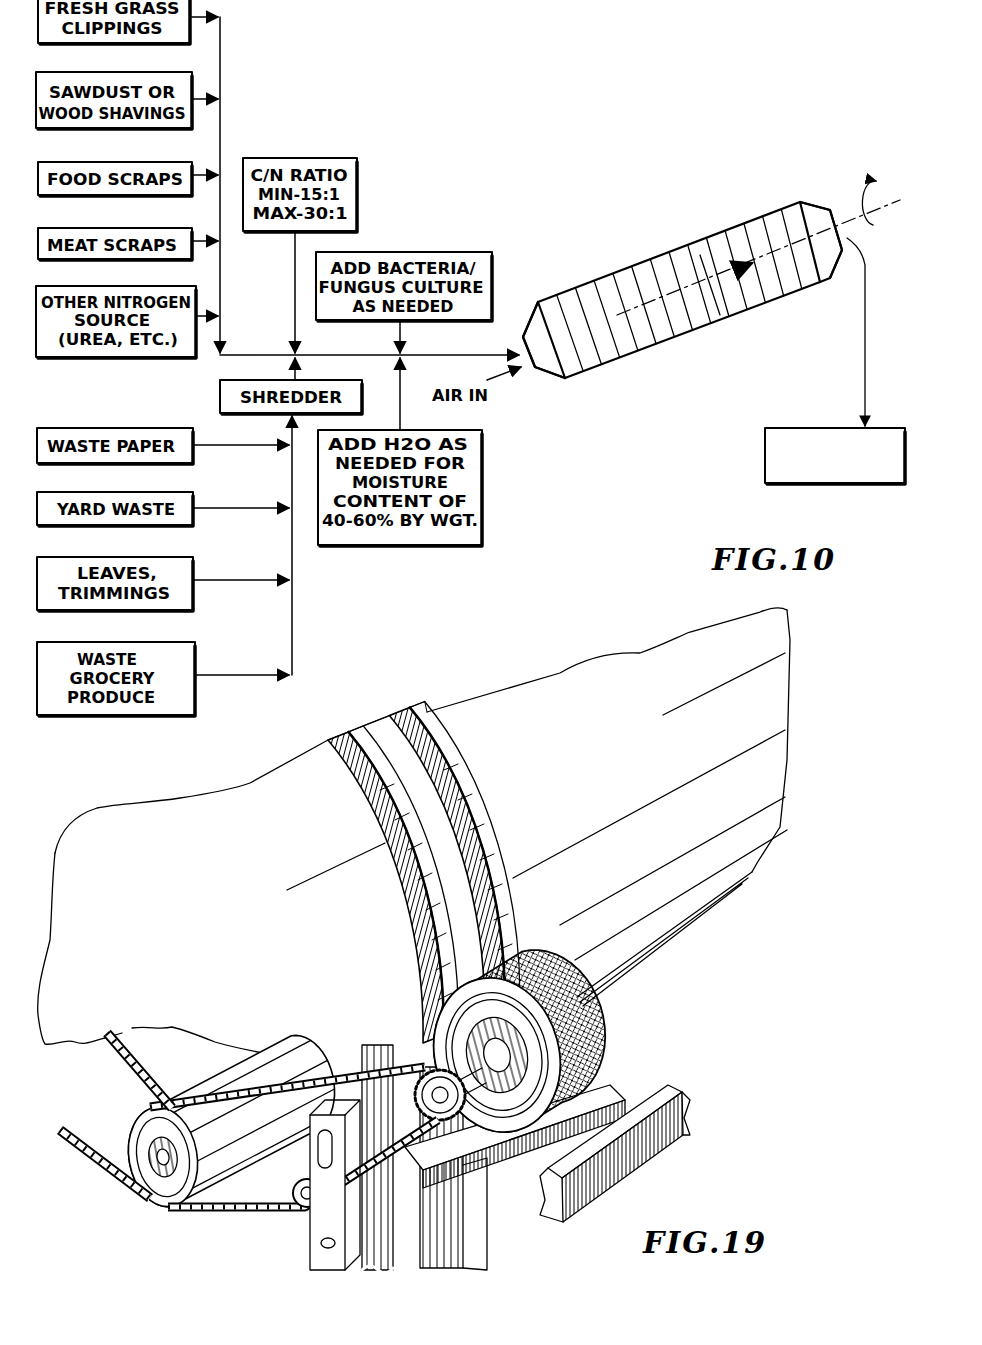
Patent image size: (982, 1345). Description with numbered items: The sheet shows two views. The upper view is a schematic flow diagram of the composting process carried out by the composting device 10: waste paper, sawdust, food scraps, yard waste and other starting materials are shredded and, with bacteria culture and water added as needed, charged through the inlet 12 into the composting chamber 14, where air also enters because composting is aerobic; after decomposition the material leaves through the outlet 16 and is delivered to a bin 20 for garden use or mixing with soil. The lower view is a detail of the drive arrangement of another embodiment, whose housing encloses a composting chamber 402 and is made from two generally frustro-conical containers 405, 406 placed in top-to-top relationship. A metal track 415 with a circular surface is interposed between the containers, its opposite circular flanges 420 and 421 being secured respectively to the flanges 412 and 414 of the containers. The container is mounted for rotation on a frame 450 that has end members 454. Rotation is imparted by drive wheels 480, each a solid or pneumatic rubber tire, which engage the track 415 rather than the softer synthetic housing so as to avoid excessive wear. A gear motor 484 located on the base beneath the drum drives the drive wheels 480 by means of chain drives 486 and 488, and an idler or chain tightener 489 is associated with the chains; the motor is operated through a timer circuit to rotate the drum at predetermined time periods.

In FIG. 10, the composting device 10 is at (663, 251).
In FIG. 10, the inlet 12 is at (552, 382).
In FIG. 10, the composting chamber 14 is at (718, 307).
In FIG. 10, the outlet 16 is at (815, 208).
In FIG. 10, the bin 20 is at (765, 452).
In FIG. 19, the composting chamber 402 is at (594, 657).
In FIG. 19, the container 405 is at (240, 929).
In FIG. 19, the container 406 is at (645, 789).
In FIG. 19, the container flange 412 is at (365, 800).
In FIG. 19, the container flange 414 is at (458, 790).
In FIG. 19, the track 415 is at (375, 735).
In FIG. 19, the track flange 420 is at (346, 730).
In FIG. 19, the track flange 421 is at (410, 714).
In FIG. 19, the frame 450 is at (478, 1246).
In FIG. 19, the end member 454 is at (597, 1186).
In FIG. 19, the drive wheel 480 is at (596, 1032).
In FIG. 19, the gear motor 484 is at (255, 1223).
In FIG. 19, the chain drive 486 is at (113, 1180).
In FIG. 19, the chain drive 488 is at (292, 1228).
In FIG. 19, the idler or chain tightener 489 is at (370, 1226).